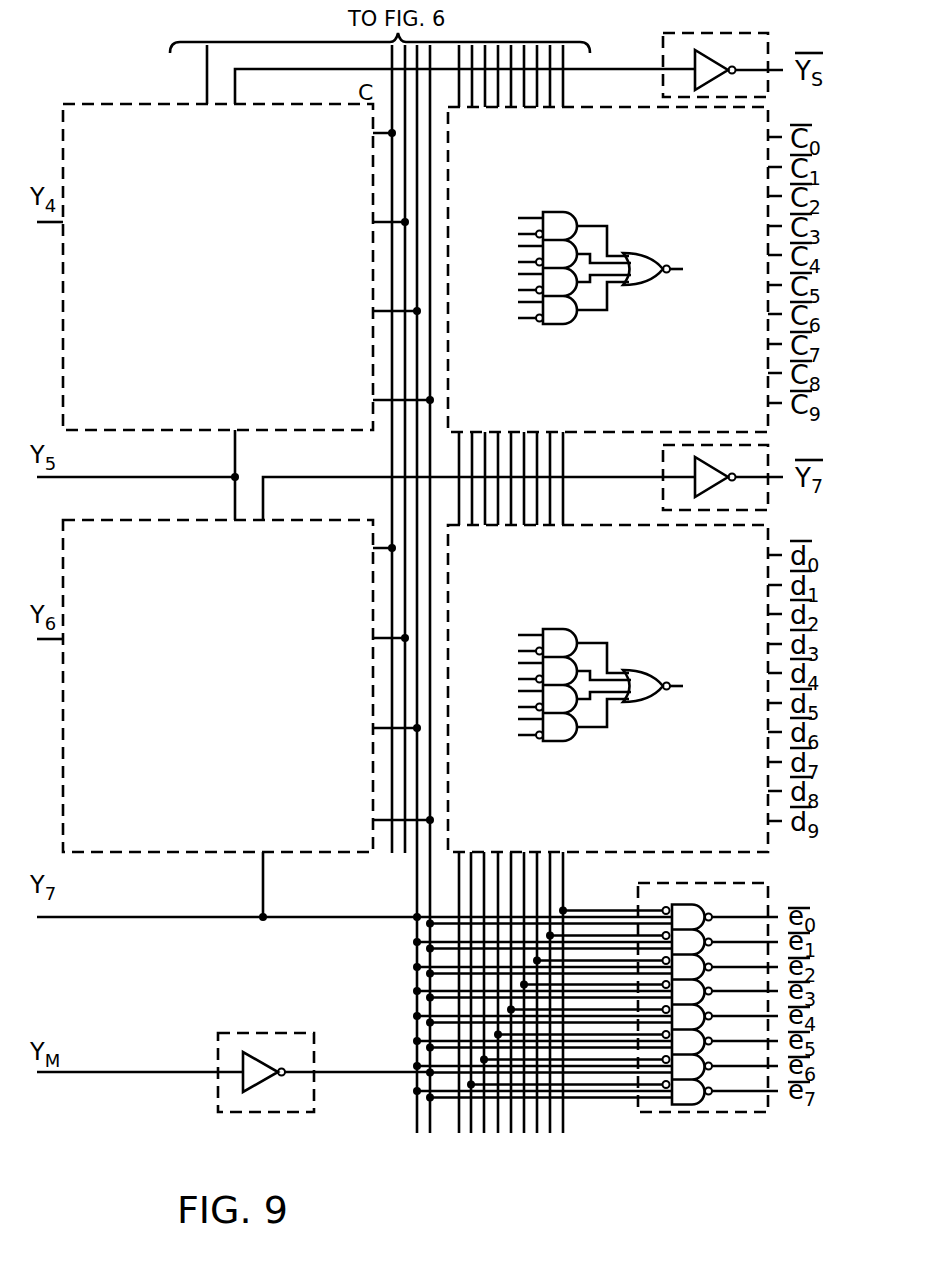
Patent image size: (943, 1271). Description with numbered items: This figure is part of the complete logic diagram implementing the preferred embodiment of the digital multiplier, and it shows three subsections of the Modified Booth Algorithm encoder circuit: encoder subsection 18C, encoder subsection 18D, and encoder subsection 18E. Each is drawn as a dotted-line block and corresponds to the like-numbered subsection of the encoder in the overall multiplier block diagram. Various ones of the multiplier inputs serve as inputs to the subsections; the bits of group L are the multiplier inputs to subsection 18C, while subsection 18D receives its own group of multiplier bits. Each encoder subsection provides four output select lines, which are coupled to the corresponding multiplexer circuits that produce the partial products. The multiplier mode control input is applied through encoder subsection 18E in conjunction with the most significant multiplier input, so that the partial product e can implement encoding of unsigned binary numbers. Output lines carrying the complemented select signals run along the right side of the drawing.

The encoder subsection 18C is at (248, 253).
The encoder subsection 18D is at (248, 671).
The encoder subsection 18E is at (266, 1058).